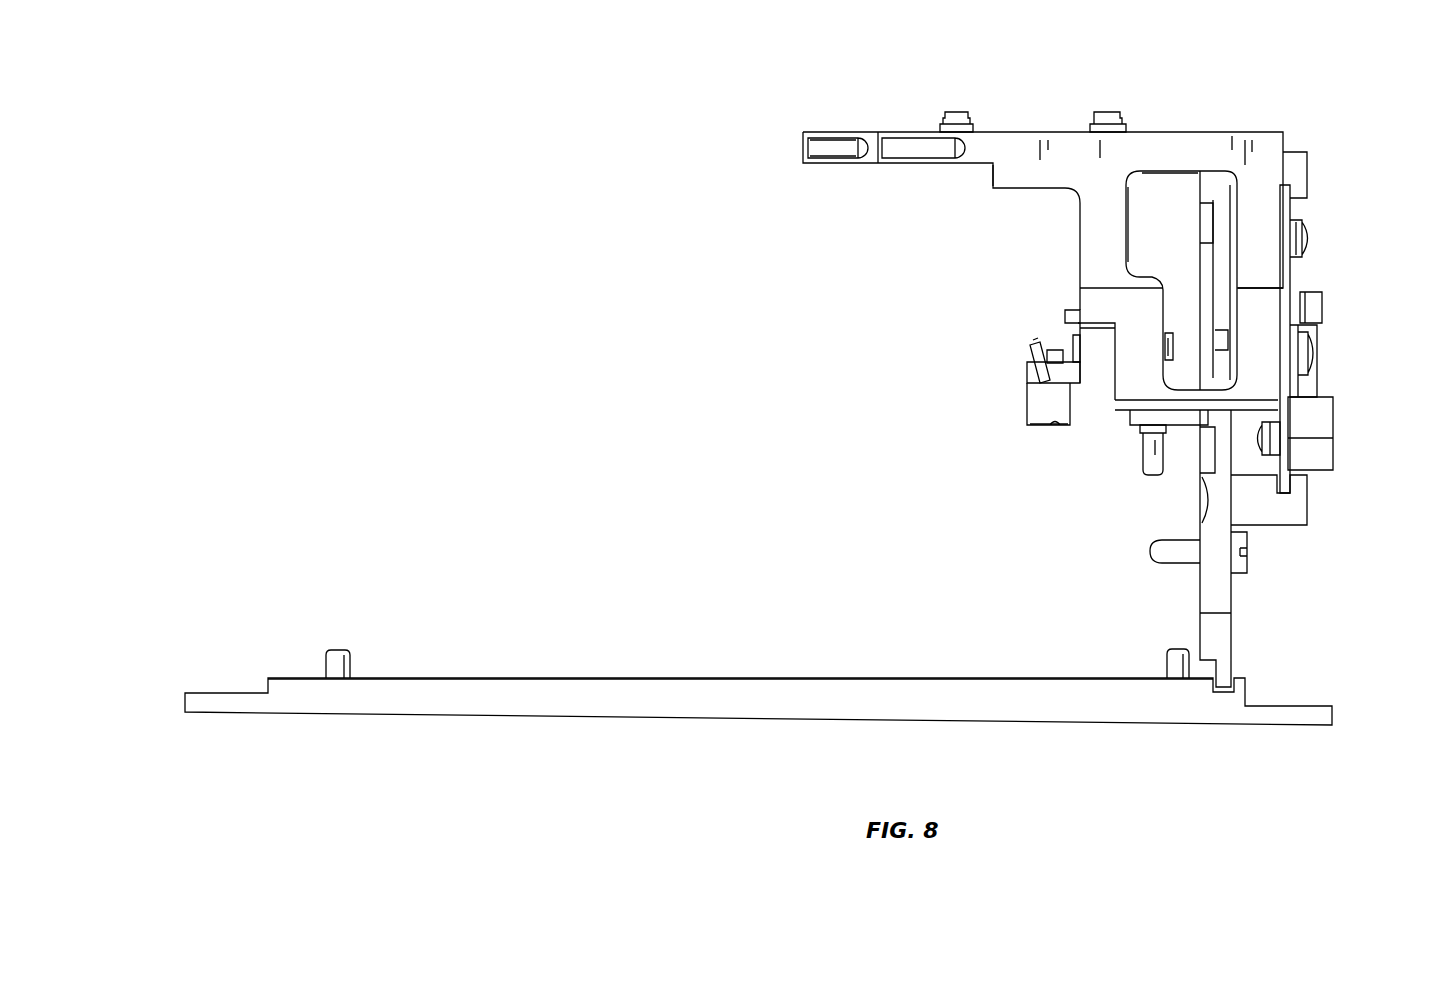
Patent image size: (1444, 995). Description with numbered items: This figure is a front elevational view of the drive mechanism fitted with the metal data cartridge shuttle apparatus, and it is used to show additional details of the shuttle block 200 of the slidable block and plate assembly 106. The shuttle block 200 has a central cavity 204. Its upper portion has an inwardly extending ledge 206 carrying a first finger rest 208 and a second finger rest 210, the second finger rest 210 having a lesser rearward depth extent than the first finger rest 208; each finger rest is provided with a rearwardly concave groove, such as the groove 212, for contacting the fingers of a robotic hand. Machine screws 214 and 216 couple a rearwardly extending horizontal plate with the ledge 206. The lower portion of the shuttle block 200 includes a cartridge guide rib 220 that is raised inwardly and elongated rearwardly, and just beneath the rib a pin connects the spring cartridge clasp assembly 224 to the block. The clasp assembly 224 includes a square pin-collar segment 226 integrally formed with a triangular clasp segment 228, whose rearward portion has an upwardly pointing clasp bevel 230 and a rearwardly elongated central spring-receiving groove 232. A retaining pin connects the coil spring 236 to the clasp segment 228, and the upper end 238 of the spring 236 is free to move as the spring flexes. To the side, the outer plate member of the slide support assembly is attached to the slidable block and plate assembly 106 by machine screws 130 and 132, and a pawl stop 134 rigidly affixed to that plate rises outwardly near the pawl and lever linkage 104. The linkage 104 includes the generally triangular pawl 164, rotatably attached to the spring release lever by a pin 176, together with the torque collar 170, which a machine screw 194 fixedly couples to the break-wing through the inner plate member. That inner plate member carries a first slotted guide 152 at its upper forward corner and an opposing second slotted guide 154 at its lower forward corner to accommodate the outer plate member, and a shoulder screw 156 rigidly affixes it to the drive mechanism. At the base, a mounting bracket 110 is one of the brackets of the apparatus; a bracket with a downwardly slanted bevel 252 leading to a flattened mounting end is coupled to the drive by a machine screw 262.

The pawl and lever linkage 104 is at (1310, 290).
The slidable block and plate assembly 106 is at (1258, 130).
The mounting bracket 110 is at (785, 678).
The machine screw 130 is at (1302, 355).
The machine screw 132 is at (1310, 228).
The pawl stop 134 is at (1322, 423).
The first slotted guide 152 is at (1295, 162).
The second slotted guide 154 is at (1295, 517).
The shoulder screw 156 is at (1250, 560).
The pawl 164 is at (1312, 388).
The torque collar 170 is at (1185, 430).
The pin 176 is at (1325, 302).
The machine screw 194 is at (1262, 430).
The shuttle block 200 is at (1042, 130).
The central cavity 204 is at (1128, 226).
The ledge 206 is at (1030, 170).
The first finger rest 208 is at (898, 130).
The second finger rest 210 is at (845, 130).
The groove 212 is at (820, 150).
The machine screw 214 is at (952, 112).
The machine screw 216 is at (1112, 112).
The cartridge guide rib 220 is at (1072, 310).
The spring cartridge clasp assembly 224 is at (1040, 420).
The pin-collar segment 226 is at (1098, 375).
The clasp segment 228 is at (1040, 402).
The clasp bevel 230 is at (1075, 345).
The spring-receiving groove 232 is at (1045, 380).
The coil spring 236 is at (1050, 365).
The upper end 238 is at (1037, 345).
The bevel 252 is at (570, 678).
The machine screw 262 is at (322, 664).